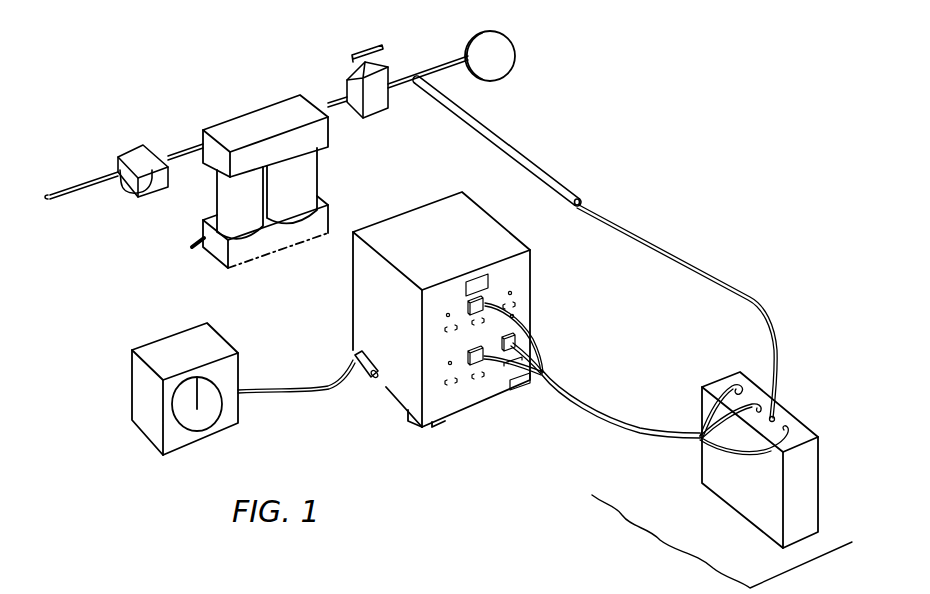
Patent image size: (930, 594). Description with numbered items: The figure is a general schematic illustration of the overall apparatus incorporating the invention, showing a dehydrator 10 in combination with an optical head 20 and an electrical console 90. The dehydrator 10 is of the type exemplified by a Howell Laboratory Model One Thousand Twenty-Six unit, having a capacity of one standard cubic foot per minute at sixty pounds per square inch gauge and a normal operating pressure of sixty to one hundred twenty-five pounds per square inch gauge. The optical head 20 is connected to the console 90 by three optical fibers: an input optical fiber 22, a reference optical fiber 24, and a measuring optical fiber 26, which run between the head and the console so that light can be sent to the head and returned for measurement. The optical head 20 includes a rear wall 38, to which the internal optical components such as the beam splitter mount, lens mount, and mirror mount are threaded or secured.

The dehydrator 10 is at (270, 112).
The optical head 20 is at (788, 412).
The input optical fiber 22 is at (524, 322).
The reference optical fiber 24 is at (509, 368).
The measuring optical fiber 26 is at (526, 346).
The rear wall 38 is at (823, 480).
The electrical console 90 is at (386, 388).